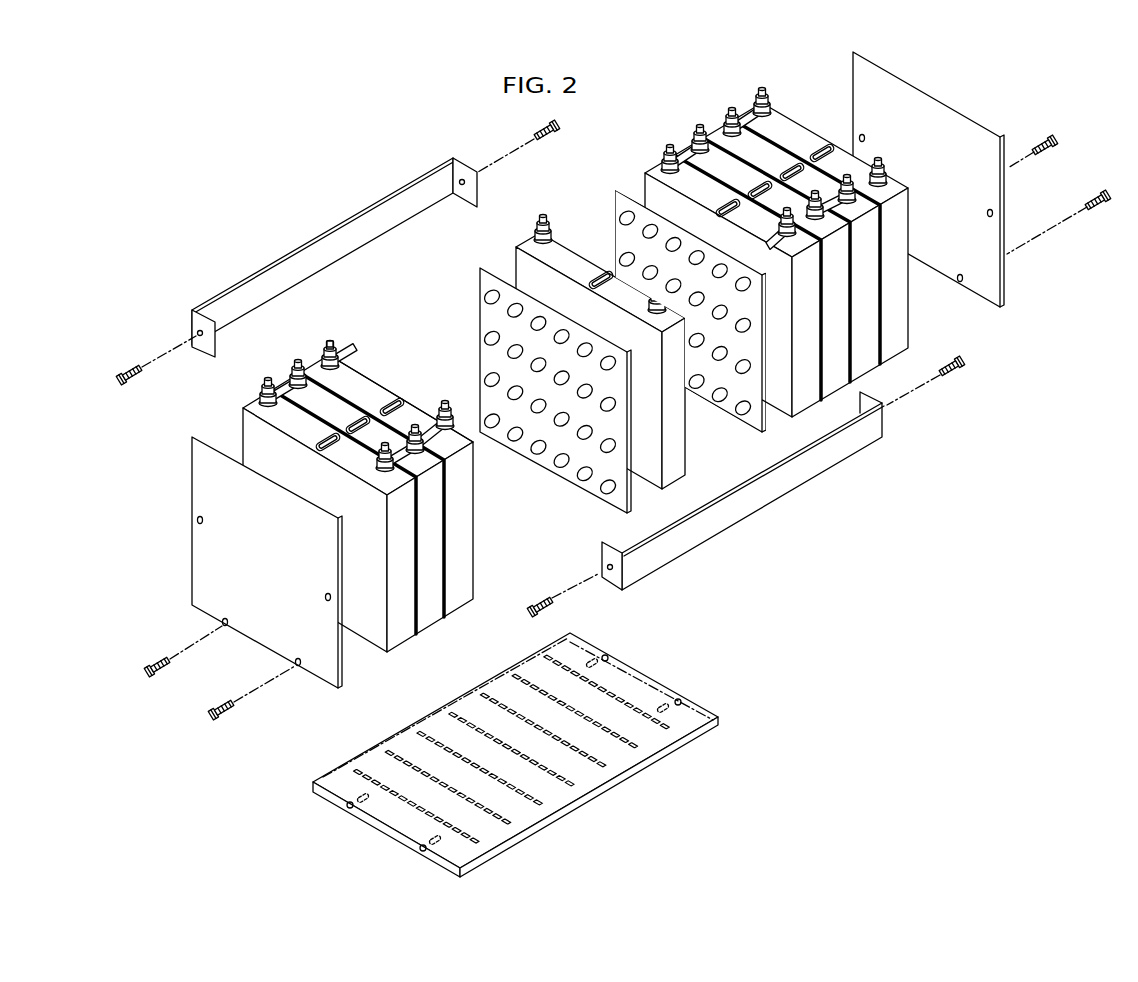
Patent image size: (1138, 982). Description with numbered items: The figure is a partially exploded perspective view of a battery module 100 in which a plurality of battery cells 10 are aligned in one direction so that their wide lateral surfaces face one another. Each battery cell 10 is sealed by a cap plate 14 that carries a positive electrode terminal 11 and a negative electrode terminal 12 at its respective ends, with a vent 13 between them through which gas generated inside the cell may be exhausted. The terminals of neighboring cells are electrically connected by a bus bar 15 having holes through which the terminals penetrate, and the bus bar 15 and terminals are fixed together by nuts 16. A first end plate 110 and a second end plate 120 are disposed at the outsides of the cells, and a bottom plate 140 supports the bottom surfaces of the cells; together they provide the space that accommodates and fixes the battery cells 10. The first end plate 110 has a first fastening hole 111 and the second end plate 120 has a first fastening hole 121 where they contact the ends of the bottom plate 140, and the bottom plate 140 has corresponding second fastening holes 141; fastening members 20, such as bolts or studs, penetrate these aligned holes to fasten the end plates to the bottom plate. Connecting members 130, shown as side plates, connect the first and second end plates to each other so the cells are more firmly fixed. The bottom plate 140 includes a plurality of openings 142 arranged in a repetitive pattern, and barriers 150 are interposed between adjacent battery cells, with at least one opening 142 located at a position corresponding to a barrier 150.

The battery module 100 is at (192, 198).
The battery cell 10 is at (461, 553).
The positive electrode terminal 11 is at (331, 345).
The negative electrode terminal 12 is at (445, 415).
The vent 13 is at (381, 400).
The cap plate 14 is at (362, 357).
The bus bar 15 is at (282, 388).
The nut 16 is at (327, 361).
The fastening member 20 is at (220, 709).
The first end plate 110 is at (337, 651).
The first fastening hole 111 is at (295, 663).
The second end plate 120 is at (1007, 263).
The first fastening hole 121 is at (962, 283).
The connecting member 130 is at (188, 323).
The bottom plate 140 is at (609, 794).
The second fastening hole 141 is at (681, 700).
The opening 142 is at (643, 760).
The barrier 150 is at (608, 192).